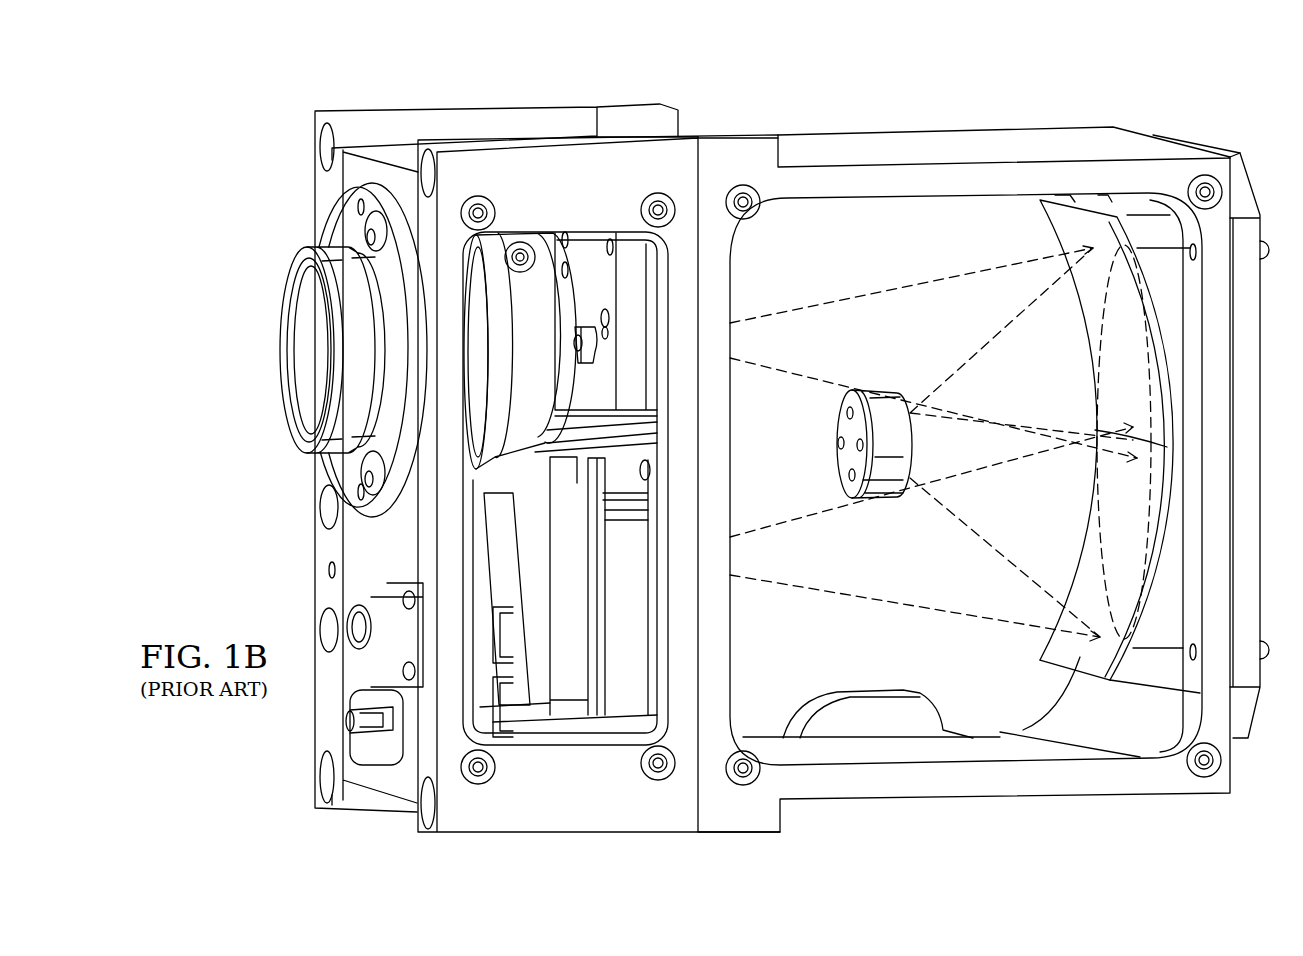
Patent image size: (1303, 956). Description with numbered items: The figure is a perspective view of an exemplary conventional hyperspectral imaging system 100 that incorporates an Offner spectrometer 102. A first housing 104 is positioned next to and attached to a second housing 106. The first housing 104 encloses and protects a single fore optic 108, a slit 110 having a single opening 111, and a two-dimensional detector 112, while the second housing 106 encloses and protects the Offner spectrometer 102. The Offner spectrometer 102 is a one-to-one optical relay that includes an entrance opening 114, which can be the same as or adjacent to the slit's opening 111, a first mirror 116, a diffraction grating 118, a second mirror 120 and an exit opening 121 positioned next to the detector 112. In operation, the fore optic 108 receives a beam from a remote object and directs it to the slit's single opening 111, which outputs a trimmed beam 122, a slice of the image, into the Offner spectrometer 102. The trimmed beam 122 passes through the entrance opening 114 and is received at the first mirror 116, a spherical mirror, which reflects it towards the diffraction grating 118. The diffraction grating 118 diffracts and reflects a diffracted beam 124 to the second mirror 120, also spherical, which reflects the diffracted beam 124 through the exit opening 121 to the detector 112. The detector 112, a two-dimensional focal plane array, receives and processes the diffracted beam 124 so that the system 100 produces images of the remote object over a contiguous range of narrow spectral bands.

The hyperspectral imaging system 100 is at (1043, 97).
The Offner spectrometer 102 is at (1003, 703).
The first housing 104 is at (454, 106).
The second housing 106 is at (943, 130).
The fore optic 108 is at (289, 267).
The slit 110 is at (585, 248).
The opening 111 is at (606, 352).
The 2-dimensional detector 112 is at (630, 630).
The entrance opening 114 is at (608, 348).
The first mirror 116 is at (1060, 233).
The diffraction grating 118 is at (837, 457).
The second mirror 120 is at (1052, 647).
The exit opening 121 is at (636, 528).
The trimmed beam 122 is at (883, 290).
The diffracted beam 124 is at (883, 607).